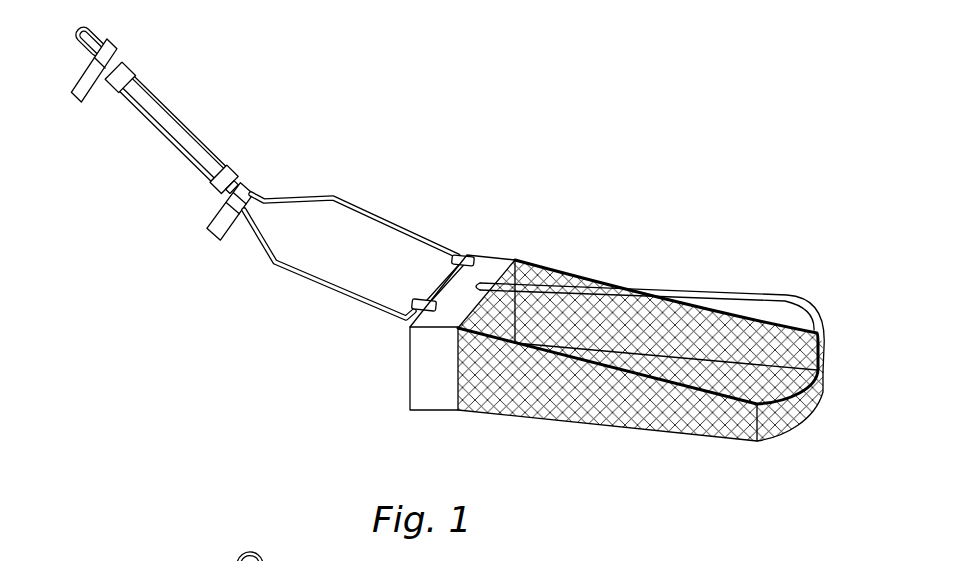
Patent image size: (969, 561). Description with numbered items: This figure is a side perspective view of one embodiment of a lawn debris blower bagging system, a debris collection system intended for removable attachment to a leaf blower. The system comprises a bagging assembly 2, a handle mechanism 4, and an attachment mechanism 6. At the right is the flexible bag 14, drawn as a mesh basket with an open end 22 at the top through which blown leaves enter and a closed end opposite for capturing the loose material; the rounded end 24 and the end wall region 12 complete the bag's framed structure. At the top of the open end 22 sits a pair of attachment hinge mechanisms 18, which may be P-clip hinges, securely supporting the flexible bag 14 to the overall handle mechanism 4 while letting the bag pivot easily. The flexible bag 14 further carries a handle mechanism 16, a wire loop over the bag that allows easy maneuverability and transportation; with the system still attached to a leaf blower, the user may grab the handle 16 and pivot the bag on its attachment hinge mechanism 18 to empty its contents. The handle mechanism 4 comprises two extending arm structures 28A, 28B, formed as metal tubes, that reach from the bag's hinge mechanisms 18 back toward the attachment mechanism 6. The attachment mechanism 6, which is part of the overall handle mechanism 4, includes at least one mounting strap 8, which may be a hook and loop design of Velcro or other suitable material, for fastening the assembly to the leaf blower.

The bagging assembly 2 is at (790, 459).
The handle mechanism 4 is at (385, 368).
The attachment mechanism 6 is at (260, 168).
The mounting strap 8 is at (78, 103).
The pivot coupling 12 is at (213, 185).
The flexible bag 14 is at (567, 280).
The handle mechanism 16 is at (760, 295).
The attachment hinge mechanism 18 is at (468, 254).
The open end 22 is at (412, 388).
The rounded end 24 is at (818, 400).
The extending arm structure 28A is at (387, 216).
The extending arm structure 28B is at (322, 290).